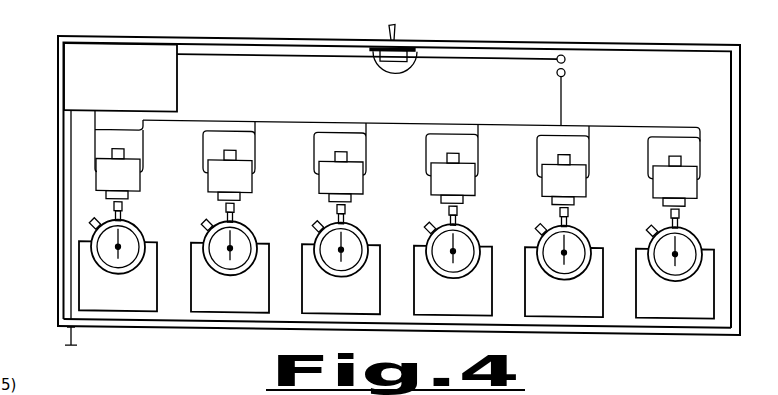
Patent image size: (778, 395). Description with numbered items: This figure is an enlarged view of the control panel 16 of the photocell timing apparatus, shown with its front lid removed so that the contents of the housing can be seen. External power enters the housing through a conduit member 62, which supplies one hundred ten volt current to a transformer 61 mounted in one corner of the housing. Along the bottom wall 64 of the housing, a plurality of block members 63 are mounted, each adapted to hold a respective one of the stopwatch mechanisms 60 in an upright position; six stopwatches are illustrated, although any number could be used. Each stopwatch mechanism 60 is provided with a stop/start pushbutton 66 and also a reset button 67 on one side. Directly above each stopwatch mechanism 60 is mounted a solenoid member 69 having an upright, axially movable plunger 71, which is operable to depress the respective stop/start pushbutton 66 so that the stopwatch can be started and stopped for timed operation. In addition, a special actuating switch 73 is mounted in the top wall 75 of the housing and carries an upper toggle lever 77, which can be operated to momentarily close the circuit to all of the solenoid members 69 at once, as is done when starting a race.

The control panel 16 is at (652, 24).
The stopwatch mechanism 60 is at (147, 220).
The transformer 61 is at (124, 49).
The conduit member 62 is at (558, 36).
The block member 63 is at (93, 284).
The bottom wall 64 is at (175, 320).
The stop/start pushbutton 66 is at (123, 204).
The reset button 67 is at (99, 219).
The solenoid member 69 is at (122, 170).
The plunger 71 is at (240, 195).
The actuating switch 73 is at (398, 53).
The top wall 75 is at (226, 41).
The toggle lever 77 is at (392, 20).